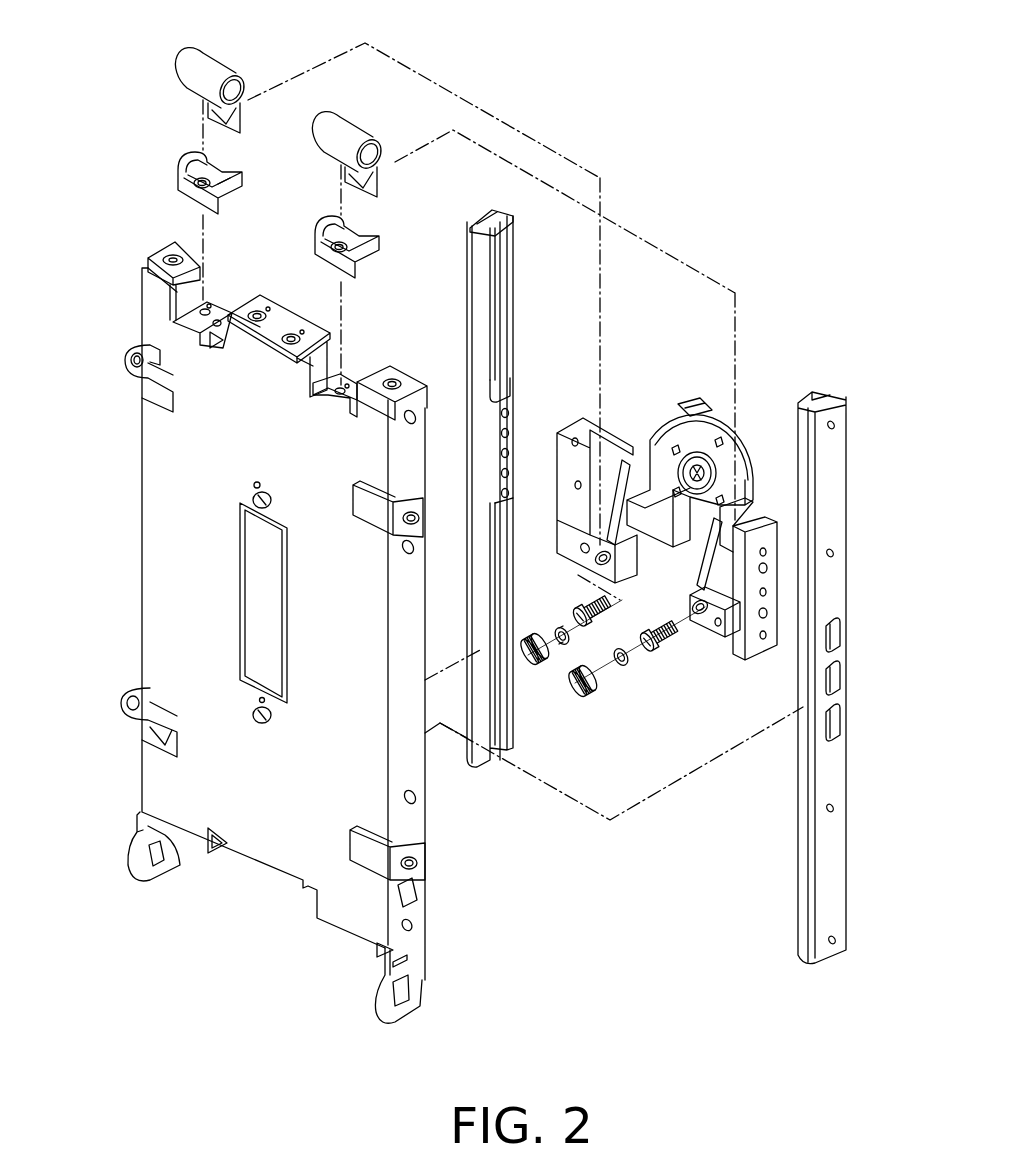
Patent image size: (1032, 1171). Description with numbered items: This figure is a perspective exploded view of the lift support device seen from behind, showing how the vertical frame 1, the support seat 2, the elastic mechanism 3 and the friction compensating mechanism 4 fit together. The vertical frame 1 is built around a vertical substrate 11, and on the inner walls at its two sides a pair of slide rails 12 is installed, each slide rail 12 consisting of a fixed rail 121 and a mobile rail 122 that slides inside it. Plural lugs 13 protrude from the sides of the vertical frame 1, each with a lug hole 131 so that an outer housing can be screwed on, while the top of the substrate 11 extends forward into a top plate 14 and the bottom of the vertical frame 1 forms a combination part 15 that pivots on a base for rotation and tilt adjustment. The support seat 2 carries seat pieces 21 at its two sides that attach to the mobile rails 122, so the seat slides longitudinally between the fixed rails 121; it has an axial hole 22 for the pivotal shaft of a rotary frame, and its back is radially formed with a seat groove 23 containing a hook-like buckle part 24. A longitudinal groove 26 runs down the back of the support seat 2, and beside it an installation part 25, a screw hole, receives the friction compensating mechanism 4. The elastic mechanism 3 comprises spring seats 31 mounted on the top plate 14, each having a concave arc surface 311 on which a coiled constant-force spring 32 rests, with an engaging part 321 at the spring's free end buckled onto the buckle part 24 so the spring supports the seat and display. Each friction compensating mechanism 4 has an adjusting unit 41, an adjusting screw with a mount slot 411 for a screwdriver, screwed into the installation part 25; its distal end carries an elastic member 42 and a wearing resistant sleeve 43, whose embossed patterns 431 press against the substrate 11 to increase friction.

The vertical frame 1 is at (155, 512).
The vertical substrate 11 is at (255, 461).
The slide rail 12 is at (471, 307).
The fixed rail 121 is at (506, 266).
The mobile rail 122 is at (512, 420).
The lug 13 is at (133, 344).
The lug hole 131 is at (127, 360).
The top plate 14 is at (207, 305).
The combination part 15 is at (418, 985).
The support seat 2 is at (683, 410).
The seat piece 21 is at (778, 632).
The axial hole 22 is at (697, 470).
The seat groove 23 is at (760, 540).
The buckle part 24 is at (585, 500).
The installation part 25 is at (707, 622).
The longitudinal groove 26 is at (645, 478).
The elastic mechanism 3 is at (160, 45).
The spring seat 31 is at (242, 190).
The concave arc surface 311 is at (217, 175).
The constant-force spring 32 is at (218, 70).
The engaging part 321 is at (243, 102).
The friction compensating mechanism 4 is at (692, 653).
The adjusting unit 41 is at (670, 612).
The mount slot 411 is at (652, 650).
The elastic member 42 is at (622, 655).
The wearing resistant sleeve 43 is at (573, 662).
The embossed patterns 431 is at (587, 690).